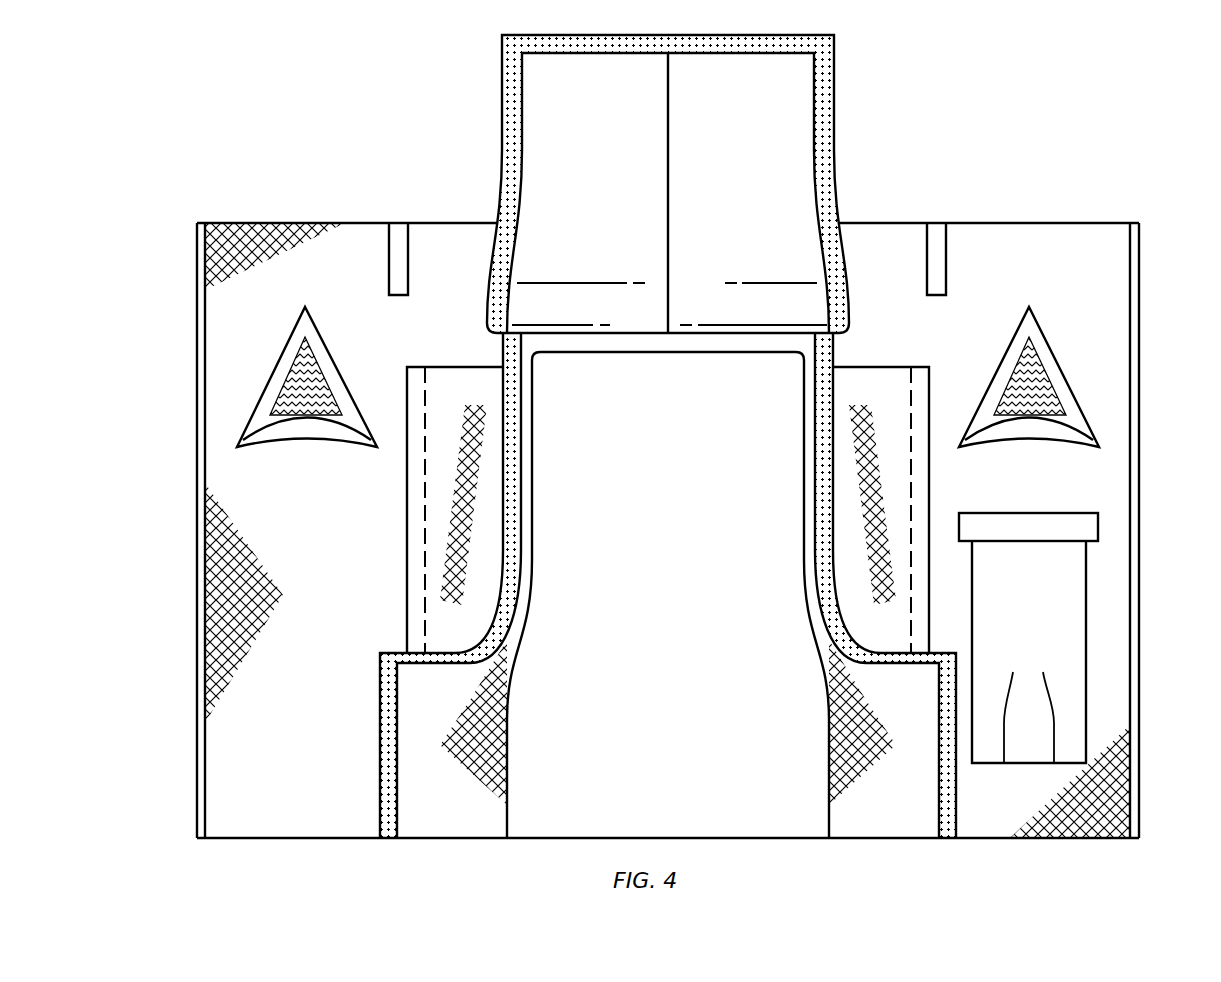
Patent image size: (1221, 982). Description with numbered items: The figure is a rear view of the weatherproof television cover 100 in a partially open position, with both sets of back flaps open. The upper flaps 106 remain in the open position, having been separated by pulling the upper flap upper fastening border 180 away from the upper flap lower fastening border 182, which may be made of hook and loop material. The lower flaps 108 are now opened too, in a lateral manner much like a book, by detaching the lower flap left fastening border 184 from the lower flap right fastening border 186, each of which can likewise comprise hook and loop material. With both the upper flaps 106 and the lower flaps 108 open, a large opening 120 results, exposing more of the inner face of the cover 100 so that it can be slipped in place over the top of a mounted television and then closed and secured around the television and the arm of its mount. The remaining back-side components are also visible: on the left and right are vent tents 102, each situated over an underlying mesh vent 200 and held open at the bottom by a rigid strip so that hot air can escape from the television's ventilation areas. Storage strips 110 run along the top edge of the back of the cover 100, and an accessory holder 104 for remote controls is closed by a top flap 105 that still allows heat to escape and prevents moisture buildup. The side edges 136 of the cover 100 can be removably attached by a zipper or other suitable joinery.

The weatherproof television cover 100 is at (990, 223).
The vent tent 102 is at (318, 338).
The accessory holder 104 is at (1047, 645).
The top flap 105 is at (1038, 523).
The upper flaps 106 is at (668, 222).
The lower flaps 108 is at (461, 805).
The storage strips 110 is at (389, 258).
The opening 120 is at (686, 689).
The side edges 136 is at (197, 472).
The upper flap upper fastening border 180 is at (838, 112).
The upper flap lower fastening border 182 is at (513, 488).
The lower flap left fastening border 184 is at (385, 742).
The lower flap right fastening border 186 is at (955, 778).
The mesh vent 200 is at (295, 365).